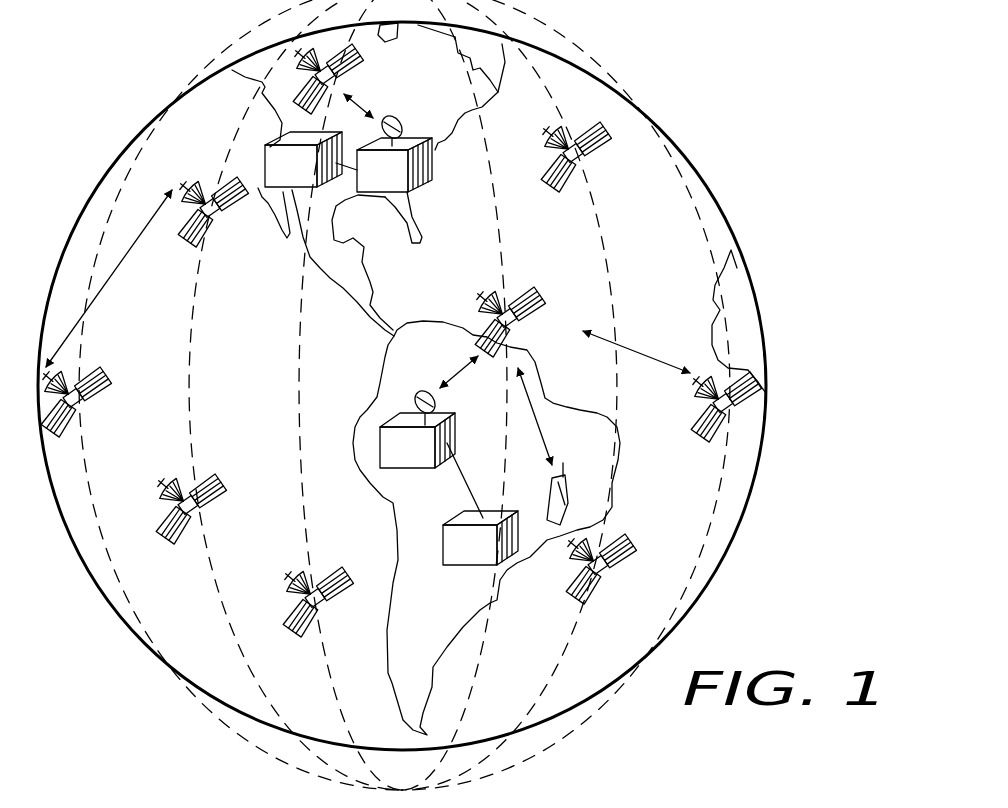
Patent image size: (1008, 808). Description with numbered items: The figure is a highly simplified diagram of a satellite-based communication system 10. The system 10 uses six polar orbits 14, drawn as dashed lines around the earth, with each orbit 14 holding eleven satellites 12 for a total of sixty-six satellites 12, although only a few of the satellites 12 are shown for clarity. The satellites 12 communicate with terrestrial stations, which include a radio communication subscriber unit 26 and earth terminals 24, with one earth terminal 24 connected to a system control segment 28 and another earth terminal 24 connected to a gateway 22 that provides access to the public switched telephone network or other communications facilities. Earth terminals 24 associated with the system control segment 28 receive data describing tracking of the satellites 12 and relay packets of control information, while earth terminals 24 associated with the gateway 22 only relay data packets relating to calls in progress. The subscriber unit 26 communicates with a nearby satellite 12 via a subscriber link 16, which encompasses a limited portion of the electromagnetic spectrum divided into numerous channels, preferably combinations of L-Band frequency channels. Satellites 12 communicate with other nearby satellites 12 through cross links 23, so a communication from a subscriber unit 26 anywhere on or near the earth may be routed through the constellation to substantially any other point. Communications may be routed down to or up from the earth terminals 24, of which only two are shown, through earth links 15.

The communication system 10 is at (840, 610).
The satellites 12 is at (352, 68).
The polar orbits 14 is at (669, 150).
The earth links 15 is at (450, 380).
The subscriber links 16 is at (655, 359).
The gateway 22 is at (468, 568).
The cross links 23 is at (134, 243).
The earth terminals 24 is at (433, 137).
The subscriber unit 26 is at (572, 485).
The system control segment 28 is at (297, 183).